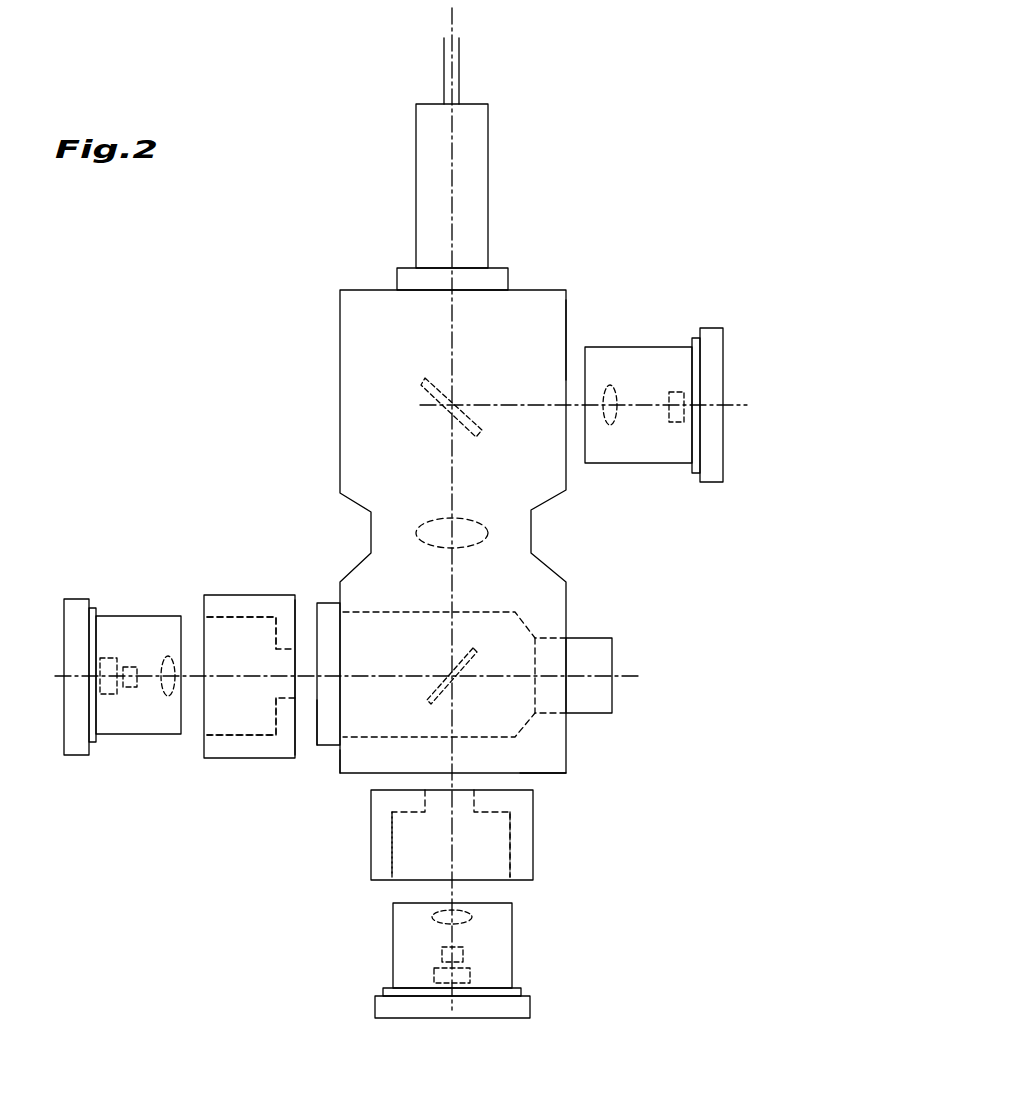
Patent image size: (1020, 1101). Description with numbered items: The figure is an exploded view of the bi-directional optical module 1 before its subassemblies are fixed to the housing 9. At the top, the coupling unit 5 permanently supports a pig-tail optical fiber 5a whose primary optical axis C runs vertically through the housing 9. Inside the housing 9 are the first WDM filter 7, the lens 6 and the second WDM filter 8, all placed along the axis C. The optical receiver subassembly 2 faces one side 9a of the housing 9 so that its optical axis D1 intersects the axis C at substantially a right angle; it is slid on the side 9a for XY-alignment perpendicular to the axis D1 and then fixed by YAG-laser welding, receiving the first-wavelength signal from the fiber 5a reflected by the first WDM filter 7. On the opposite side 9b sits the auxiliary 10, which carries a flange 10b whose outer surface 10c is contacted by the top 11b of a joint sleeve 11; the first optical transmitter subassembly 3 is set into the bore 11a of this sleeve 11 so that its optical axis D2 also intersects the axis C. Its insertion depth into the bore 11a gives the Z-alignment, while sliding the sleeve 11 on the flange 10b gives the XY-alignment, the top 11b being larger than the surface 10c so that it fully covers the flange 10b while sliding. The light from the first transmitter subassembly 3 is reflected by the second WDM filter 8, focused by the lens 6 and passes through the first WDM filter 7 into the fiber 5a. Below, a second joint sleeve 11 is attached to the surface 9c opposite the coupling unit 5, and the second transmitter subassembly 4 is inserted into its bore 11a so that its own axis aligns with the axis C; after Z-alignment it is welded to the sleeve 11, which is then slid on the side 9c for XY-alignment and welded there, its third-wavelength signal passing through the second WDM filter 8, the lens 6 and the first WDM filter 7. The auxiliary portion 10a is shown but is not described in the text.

The optical module 1 is at (662, 122).
The optical receiver subassembly 2 is at (650, 342).
The first optical transmitter subassembly 3 is at (130, 607).
The second transmitter subassembly 4 is at (380, 963).
The coupling unit 5 is at (499, 170).
The optical fiber 5a is at (461, 70).
The lens 6 is at (470, 522).
The first WDM filter 7 is at (423, 380).
The second WDM filter 8 is at (477, 647).
The housing 9 is at (536, 282).
The side of housing 9a is at (566, 340).
The side of housing 9b is at (340, 768).
The side of housing 9c is at (560, 775).
The auxiliary 10 is at (598, 632).
The protruding handle portion 10a is at (606, 648).
The flange 10b is at (328, 623).
The surface of flange 10c is at (315, 730).
The joint sleeve 11 is at (236, 590).
The bore 11a is at (228, 707).
The top 11b is at (295, 598).
The primary optical axis C is at (455, 23).
The optical axis D1 is at (747, 405).
The optical axis D2 is at (638, 676).